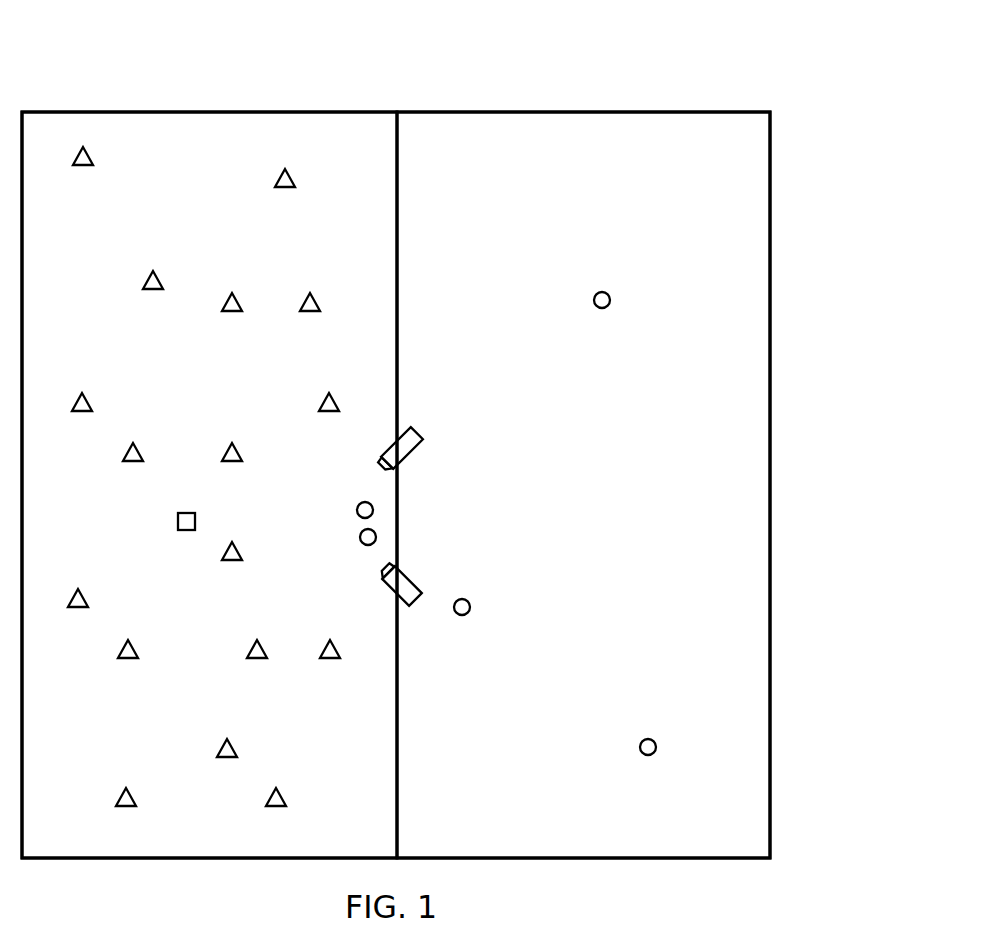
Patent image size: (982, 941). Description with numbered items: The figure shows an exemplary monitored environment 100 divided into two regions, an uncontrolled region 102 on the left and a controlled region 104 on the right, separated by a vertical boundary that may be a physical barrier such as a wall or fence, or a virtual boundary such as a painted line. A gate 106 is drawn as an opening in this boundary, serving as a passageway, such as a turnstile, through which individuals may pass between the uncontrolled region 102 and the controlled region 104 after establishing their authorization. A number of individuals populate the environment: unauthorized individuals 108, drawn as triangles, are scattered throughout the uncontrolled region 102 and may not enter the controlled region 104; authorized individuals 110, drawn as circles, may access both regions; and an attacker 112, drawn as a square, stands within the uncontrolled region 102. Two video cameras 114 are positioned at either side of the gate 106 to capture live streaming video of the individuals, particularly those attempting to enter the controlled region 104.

The monitored environment 100 is at (771, 146).
The uncontrolled region 102 is at (207, 112).
The controlled region 104 is at (578, 112).
The gate 106 is at (397, 493).
The unauthorized individuals 108 is at (277, 181).
The authorized individuals 110 is at (594, 299).
The attacker 112 is at (177, 524).
The video cameras 114 is at (423, 433).